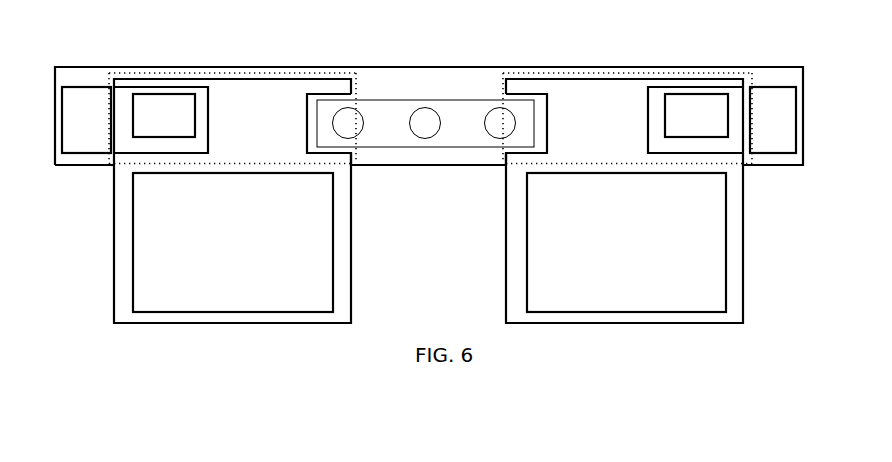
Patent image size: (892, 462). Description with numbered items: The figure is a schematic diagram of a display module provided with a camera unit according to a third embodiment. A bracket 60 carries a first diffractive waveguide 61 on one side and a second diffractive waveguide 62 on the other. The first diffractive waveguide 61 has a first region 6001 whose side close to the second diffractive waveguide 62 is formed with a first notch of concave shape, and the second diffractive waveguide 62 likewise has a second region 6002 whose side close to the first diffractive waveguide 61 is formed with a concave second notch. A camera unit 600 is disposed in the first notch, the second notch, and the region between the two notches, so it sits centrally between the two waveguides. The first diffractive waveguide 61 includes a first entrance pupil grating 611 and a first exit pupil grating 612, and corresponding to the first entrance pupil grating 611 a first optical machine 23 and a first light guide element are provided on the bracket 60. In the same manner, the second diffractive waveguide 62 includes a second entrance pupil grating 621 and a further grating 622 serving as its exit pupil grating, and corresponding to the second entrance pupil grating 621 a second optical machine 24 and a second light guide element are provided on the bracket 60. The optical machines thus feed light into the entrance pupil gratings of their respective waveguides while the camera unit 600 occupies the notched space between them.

The bracket 60 is at (450, 67).
The first diffractive waveguide 61 is at (250, 79).
The second diffractive waveguide 62 is at (608, 79).
The camera unit 600 is at (370, 100).
The first entrance pupil grating 611 is at (165, 95).
The second entrance pupil grating 621 is at (677, 94).
The first exit pupil grating 612 is at (333, 205).
The second exit pupil grating 622 is at (527, 205).
The first optical machine 23 is at (85, 84).
The second optical machine 24 is at (755, 86).
The first region 6001 is at (105, 143).
The second region 6002 is at (752, 143).